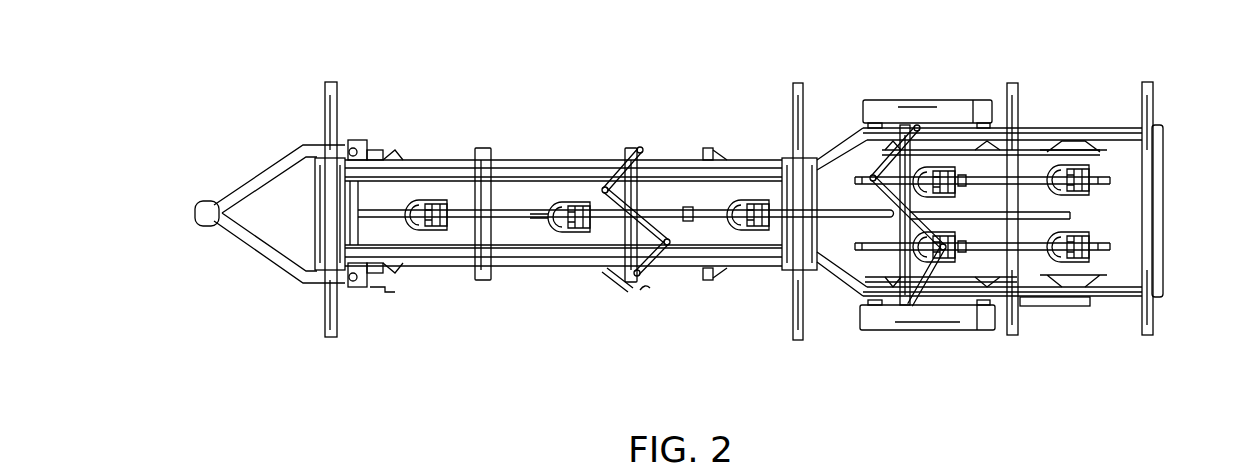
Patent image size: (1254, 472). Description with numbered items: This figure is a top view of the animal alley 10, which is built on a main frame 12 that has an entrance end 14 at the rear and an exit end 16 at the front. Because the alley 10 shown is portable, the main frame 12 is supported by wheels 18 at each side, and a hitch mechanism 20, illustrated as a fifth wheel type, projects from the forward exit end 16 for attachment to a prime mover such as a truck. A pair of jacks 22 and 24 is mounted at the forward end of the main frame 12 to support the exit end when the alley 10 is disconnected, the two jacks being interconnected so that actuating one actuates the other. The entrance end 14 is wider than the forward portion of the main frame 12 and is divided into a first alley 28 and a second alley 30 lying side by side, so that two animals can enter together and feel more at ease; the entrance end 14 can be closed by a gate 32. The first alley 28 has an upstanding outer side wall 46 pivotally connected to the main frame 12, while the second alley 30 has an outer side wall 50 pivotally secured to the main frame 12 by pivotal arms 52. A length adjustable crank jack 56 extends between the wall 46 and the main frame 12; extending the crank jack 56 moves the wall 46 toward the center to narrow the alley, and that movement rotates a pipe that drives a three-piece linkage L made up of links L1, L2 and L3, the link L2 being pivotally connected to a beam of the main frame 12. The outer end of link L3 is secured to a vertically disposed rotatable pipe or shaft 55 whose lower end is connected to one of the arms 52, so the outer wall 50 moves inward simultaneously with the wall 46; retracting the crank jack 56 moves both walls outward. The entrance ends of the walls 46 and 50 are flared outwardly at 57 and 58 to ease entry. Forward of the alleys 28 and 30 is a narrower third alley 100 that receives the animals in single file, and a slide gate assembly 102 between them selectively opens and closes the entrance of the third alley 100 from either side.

The animal alley 10 is at (635, 130).
The main frame 12 is at (548, 150).
The entrance end 14 is at (1192, 118).
The exit end 16 is at (283, 128).
The wheels 18 is at (918, 103).
The hitch mechanism 20 is at (245, 265).
The jack 22 is at (368, 283).
The jack 24 is at (360, 142).
The first alley 28 is at (1083, 263).
The second alley 30 is at (1097, 163).
The gate 32 is at (1160, 220).
The outer side wall 46 is at (1053, 283).
The outer side wall 50 is at (1050, 150).
The pivotal arms 52 is at (968, 135).
The rotatable pipe or shaft 55 is at (920, 128).
The crank jack 56 is at (1048, 307).
The flared entrance end 57 is at (1122, 297).
The flared entrance end 58 is at (1100, 147).
The third alley 100 is at (670, 200).
The slide gate assembly 102 is at (783, 116).
The three-piece linkage L is at (879, 218).
The link L1 is at (883, 305).
The link L2 is at (907, 217).
The link L3 is at (878, 170).